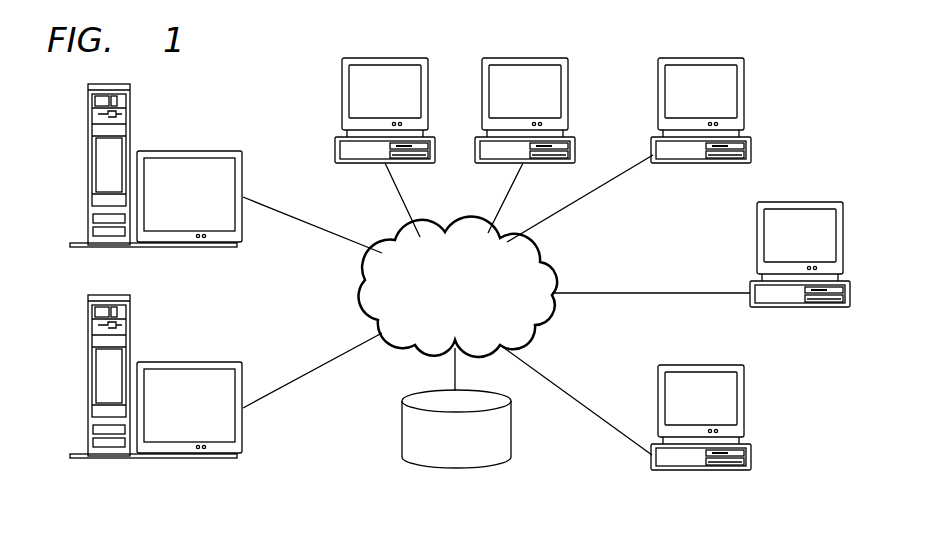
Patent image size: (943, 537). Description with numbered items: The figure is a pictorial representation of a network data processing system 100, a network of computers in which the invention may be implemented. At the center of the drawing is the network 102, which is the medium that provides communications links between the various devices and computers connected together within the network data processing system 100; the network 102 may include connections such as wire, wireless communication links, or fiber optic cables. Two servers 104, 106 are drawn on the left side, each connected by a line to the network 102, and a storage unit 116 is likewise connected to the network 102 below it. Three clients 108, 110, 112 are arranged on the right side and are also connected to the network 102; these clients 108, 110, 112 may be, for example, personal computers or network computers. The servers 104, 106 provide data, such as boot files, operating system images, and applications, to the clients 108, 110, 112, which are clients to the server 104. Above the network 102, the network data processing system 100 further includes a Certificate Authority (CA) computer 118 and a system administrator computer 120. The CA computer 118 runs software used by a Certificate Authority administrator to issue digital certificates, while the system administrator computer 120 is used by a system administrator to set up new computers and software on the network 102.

The network data processing system 100 is at (784, 69).
The network 102 is at (436, 317).
The server 104 is at (88, 167).
The server 106 is at (88, 377).
The client 108 is at (700, 58).
The client 110 is at (797, 202).
The client 112 is at (745, 408).
The storage unit 116 is at (402, 432).
The Certificate Authority (CA) computer 118 is at (342, 94).
The system administrator computer 120 is at (568, 97).